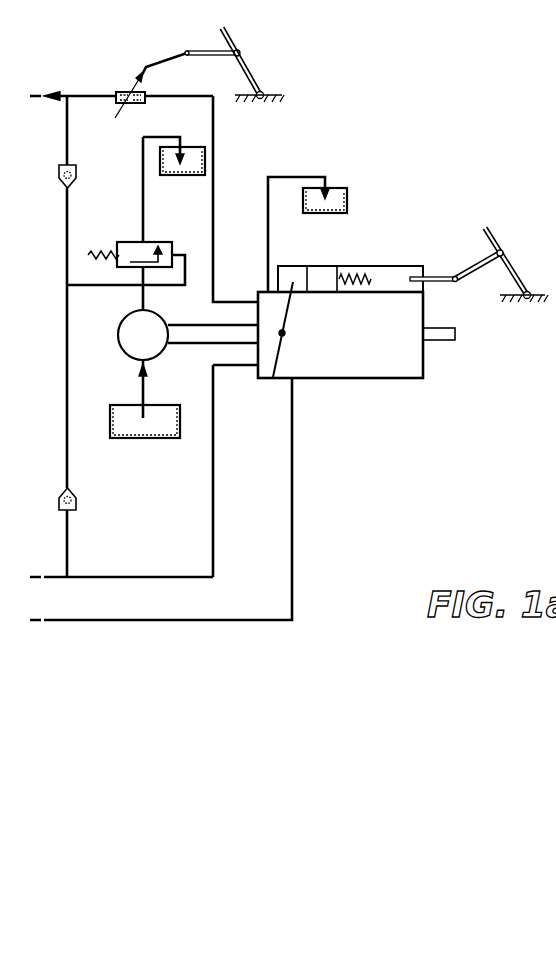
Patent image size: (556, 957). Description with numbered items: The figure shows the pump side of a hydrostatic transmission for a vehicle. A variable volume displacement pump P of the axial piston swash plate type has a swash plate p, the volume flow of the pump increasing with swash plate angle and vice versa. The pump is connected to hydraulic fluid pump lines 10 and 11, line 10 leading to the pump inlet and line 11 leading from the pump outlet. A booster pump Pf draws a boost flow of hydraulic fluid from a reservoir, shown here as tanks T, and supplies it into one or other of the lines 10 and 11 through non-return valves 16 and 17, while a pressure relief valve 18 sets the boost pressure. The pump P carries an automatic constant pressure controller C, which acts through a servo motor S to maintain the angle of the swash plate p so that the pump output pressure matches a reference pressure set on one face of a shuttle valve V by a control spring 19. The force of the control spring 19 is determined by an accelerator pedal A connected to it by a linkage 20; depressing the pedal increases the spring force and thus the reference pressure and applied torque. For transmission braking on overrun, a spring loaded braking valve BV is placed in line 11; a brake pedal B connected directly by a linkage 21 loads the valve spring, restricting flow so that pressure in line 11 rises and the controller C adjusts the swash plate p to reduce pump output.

The hydraulic fluid pump line 10 is at (218, 477).
The hydraulic fluid pump line 11 is at (214, 258).
The non-return valve 16 is at (76, 500).
The non-return valve 17 is at (76, 172).
The pressure relief valve 18 is at (165, 240).
The control spring 19 is at (356, 272).
The linkage 20 is at (478, 263).
The linkage 21 is at (203, 52).
The braking valve BV is at (123, 90).
The brake pedal B is at (228, 37).
The accelerator pedal A is at (497, 237).
The tank T is at (205, 152).
The booster pump Pf is at (143, 335).
The variable volume displacement pump P is at (327, 362).
The swash plate p is at (278, 358).
The servo motor S is at (297, 272).
The shuttle valve V is at (322, 272).
The constant pressure controller C is at (398, 272).